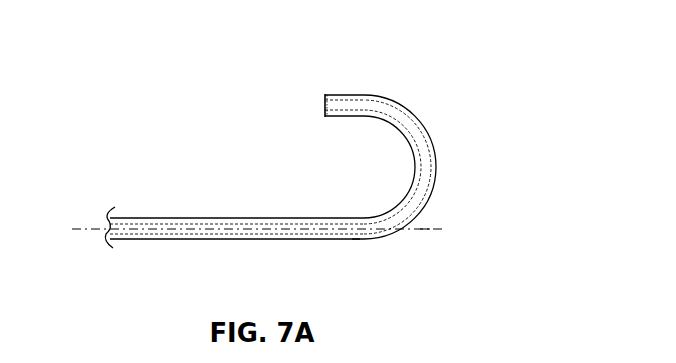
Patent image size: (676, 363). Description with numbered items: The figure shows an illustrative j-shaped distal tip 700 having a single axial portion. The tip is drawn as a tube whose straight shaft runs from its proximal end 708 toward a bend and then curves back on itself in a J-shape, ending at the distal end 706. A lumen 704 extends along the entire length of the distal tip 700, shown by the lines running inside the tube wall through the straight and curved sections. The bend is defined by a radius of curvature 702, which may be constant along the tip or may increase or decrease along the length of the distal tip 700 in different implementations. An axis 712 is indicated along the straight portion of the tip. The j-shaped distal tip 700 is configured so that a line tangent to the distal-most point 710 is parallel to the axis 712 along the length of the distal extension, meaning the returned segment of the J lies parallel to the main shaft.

The j-shaped distal tip 700 is at (253, 62).
The radius of curvature 702 is at (340, 118).
The lumen 704 is at (162, 231).
The distal end 706 is at (430, 200).
The proximal end 708 is at (193, 217).
The distal-most point 710 is at (322, 103).
The axis 712 is at (355, 240).